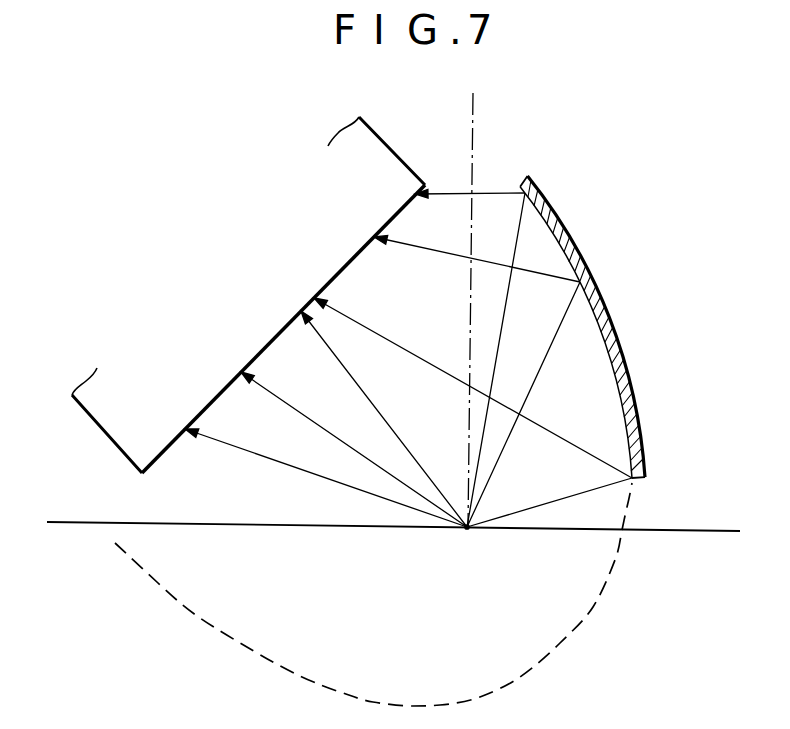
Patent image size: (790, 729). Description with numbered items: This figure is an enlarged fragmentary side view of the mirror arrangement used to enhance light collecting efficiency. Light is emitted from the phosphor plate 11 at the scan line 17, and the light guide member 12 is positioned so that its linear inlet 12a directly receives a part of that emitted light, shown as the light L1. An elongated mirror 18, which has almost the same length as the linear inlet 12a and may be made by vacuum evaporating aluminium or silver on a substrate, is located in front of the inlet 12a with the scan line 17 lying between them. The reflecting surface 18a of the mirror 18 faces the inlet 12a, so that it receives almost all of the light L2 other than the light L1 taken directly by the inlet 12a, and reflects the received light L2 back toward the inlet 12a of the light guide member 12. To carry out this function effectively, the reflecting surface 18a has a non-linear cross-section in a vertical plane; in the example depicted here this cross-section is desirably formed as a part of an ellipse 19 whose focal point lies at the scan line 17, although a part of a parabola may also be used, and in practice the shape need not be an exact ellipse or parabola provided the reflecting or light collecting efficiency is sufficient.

The phosphor plate 11 is at (678, 530).
The light guide member 12 is at (383, 157).
The linear inlet 12a is at (349, 263).
The scan line 17 is at (467, 529).
The elongated mirror 18 is at (611, 319).
The reflecting surface 18a is at (626, 374).
The ellipse 19 is at (250, 651).
The directly received light L1 is at (315, 475).
The reflected light L2 is at (452, 255).